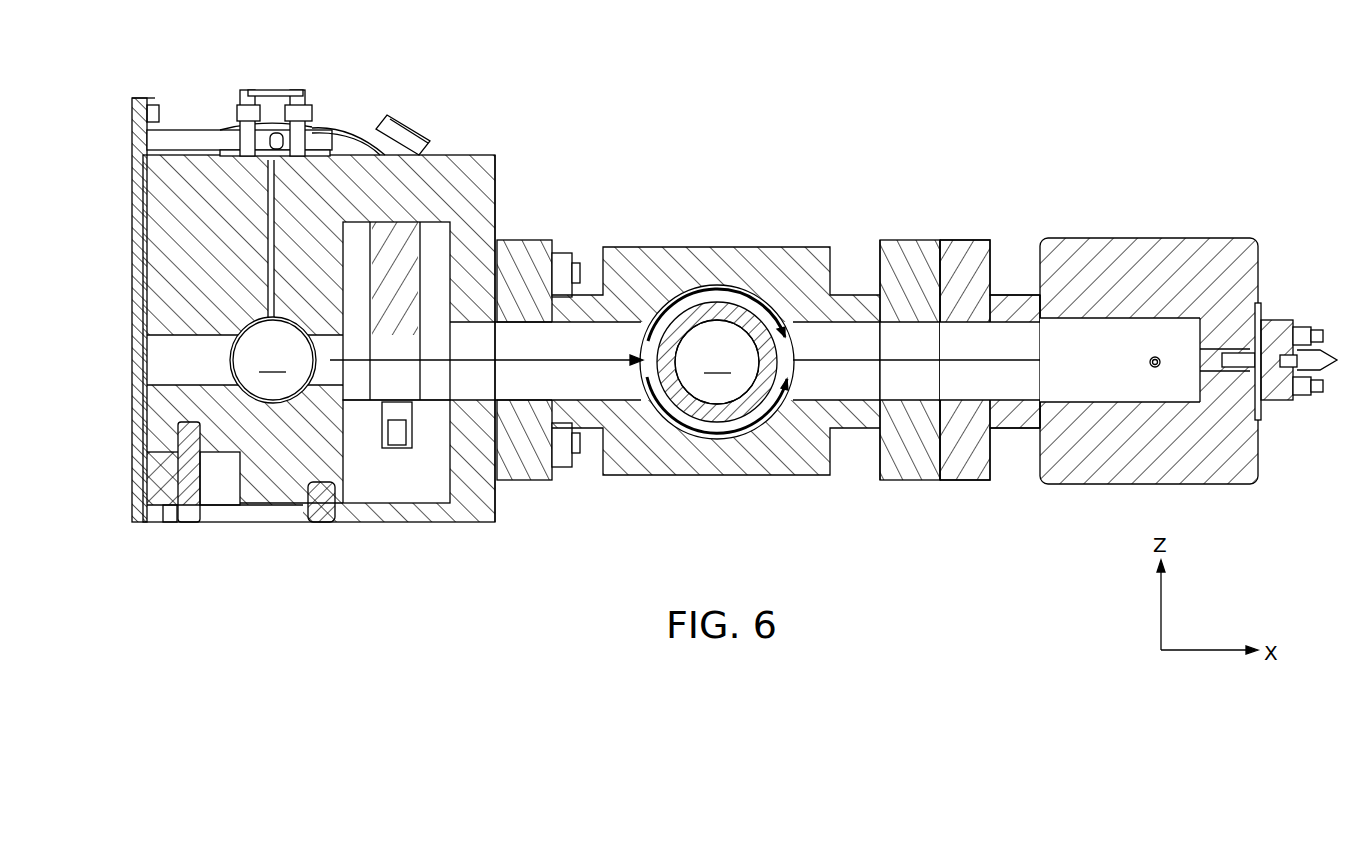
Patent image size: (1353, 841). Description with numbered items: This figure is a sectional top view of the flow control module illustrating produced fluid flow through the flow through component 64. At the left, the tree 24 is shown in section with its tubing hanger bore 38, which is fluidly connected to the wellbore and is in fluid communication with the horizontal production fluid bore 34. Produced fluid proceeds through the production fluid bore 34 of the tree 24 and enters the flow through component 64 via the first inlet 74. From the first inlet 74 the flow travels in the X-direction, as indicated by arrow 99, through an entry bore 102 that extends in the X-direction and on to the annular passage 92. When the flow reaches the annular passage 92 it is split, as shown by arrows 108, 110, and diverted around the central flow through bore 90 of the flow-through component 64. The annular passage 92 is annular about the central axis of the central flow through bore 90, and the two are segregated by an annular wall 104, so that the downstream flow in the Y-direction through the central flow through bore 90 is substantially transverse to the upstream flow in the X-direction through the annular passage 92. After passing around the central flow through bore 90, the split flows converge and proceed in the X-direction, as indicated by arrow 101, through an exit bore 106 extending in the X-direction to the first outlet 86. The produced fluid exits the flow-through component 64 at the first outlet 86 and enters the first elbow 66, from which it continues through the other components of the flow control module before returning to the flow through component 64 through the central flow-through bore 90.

The tree 24 is at (350, 58).
The production fluid bore 34 is at (478, 378).
The tubing hanger bore 38 is at (273, 360).
The flow through component 64 is at (757, 135).
The first elbow 66 is at (1141, 190).
The first inlet 74 is at (503, 347).
The first outlet 86 is at (915, 374).
The central flow through bore 90 is at (717, 362).
The annular passage 92 is at (652, 316).
The arrow indicating produced fluid flow in the X-direction 99 is at (520, 360).
The arrow indicating converged flow in the X-direction 101 is at (1050, 362).
The entry bore 102 is at (607, 385).
The annular wall 104 is at (752, 328).
The exit bore 106 is at (870, 348).
The arrow indicating split produced fluid flow 108 is at (738, 432).
The arrow indicating split produced fluid flow 110 is at (690, 300).